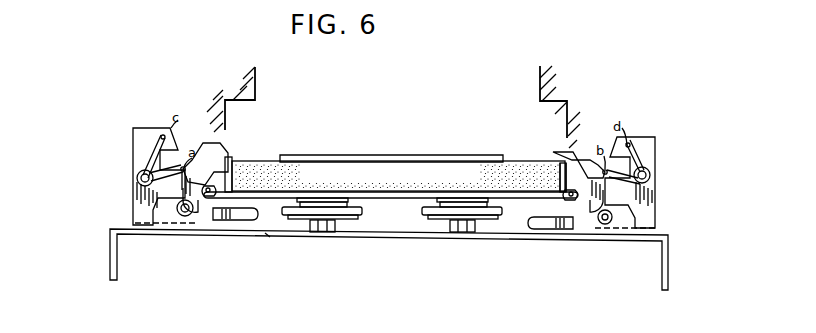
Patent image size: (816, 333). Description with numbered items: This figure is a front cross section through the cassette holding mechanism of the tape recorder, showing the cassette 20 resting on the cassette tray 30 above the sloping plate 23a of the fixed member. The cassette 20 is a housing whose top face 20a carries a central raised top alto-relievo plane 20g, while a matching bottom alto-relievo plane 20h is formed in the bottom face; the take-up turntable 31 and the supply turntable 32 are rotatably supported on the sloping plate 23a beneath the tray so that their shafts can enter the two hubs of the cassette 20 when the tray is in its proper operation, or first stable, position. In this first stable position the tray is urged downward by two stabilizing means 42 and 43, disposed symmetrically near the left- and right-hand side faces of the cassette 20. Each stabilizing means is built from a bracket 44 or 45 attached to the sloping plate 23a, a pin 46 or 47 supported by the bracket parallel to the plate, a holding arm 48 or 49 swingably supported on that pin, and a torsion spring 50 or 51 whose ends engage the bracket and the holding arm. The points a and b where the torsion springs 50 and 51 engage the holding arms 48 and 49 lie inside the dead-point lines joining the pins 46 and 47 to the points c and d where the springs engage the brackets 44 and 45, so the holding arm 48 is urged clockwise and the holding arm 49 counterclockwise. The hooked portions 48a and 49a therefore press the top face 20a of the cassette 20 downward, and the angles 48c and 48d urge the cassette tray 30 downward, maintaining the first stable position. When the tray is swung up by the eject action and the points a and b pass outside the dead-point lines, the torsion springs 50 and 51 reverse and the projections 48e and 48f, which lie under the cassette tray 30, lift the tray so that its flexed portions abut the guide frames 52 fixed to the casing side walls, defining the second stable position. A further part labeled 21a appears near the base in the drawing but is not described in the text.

The stabilizing means 42 is at (114, 95).
The stabilizing means 43 is at (693, 112).
The bracket 44 is at (165, 127).
The bracket 45 is at (642, 137).
The pin 46 is at (185, 217).
The pin 47 is at (606, 224).
The holding arm 48 is at (218, 149).
The hooked portion 48a is at (230, 151).
The angle 48c is at (210, 200).
The angle 48d is at (580, 214).
The projection 48e is at (243, 220).
The projection 48f is at (545, 229).
The holding arm 49 is at (568, 148).
The hooked portion 49a is at (562, 163).
The torsion spring 50 is at (147, 151).
The torsion spring 51 is at (655, 158).
The guide frame 52 is at (255, 81).
The cassette 20 is at (375, 149).
The top face 20a is at (280, 155).
The top alto-relievo plane 20g is at (400, 156).
The bottom alto-relievo plane 20h is at (393, 198).
The base plate flange 21a is at (660, 260).
The sloping plate 23a is at (330, 235).
The cassette tray 30 is at (269, 237).
The take-up turntable 31 is at (361, 227).
The supply turntable 32 is at (486, 223).